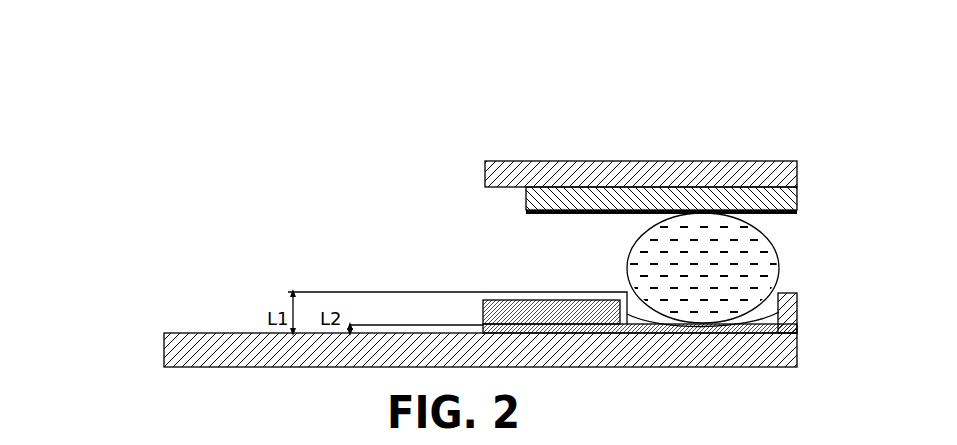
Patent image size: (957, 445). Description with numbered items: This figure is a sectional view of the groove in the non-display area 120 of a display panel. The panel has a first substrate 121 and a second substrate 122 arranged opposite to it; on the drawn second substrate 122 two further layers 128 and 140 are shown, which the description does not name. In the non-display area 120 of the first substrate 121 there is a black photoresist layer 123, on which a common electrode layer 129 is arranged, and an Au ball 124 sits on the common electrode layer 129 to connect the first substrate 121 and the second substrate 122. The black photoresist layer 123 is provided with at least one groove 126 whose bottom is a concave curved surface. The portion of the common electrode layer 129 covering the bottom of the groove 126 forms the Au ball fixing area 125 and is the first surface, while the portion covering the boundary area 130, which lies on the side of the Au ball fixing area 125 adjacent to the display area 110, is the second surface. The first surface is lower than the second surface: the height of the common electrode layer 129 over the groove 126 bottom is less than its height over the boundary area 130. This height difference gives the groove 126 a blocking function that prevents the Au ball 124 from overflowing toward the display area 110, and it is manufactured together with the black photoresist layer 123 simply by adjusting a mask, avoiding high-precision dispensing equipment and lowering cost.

The display area 110 is at (483, 156).
The non-display area 120 is at (795, 156).
The first substrate 121 is at (800, 355).
The second substrate 122 is at (797, 166).
The black photoresist layer 123 is at (797, 320).
The Au ball 124 is at (780, 258).
The Au ball fixing area 125 is at (627, 292).
The groove 126 is at (782, 286).
The electrode layer 128 is at (797, 198).
The common electrode layer 129 is at (790, 296).
The boundary area 130 is at (625, 292).
The hydrophobic coating 140 is at (797, 213).